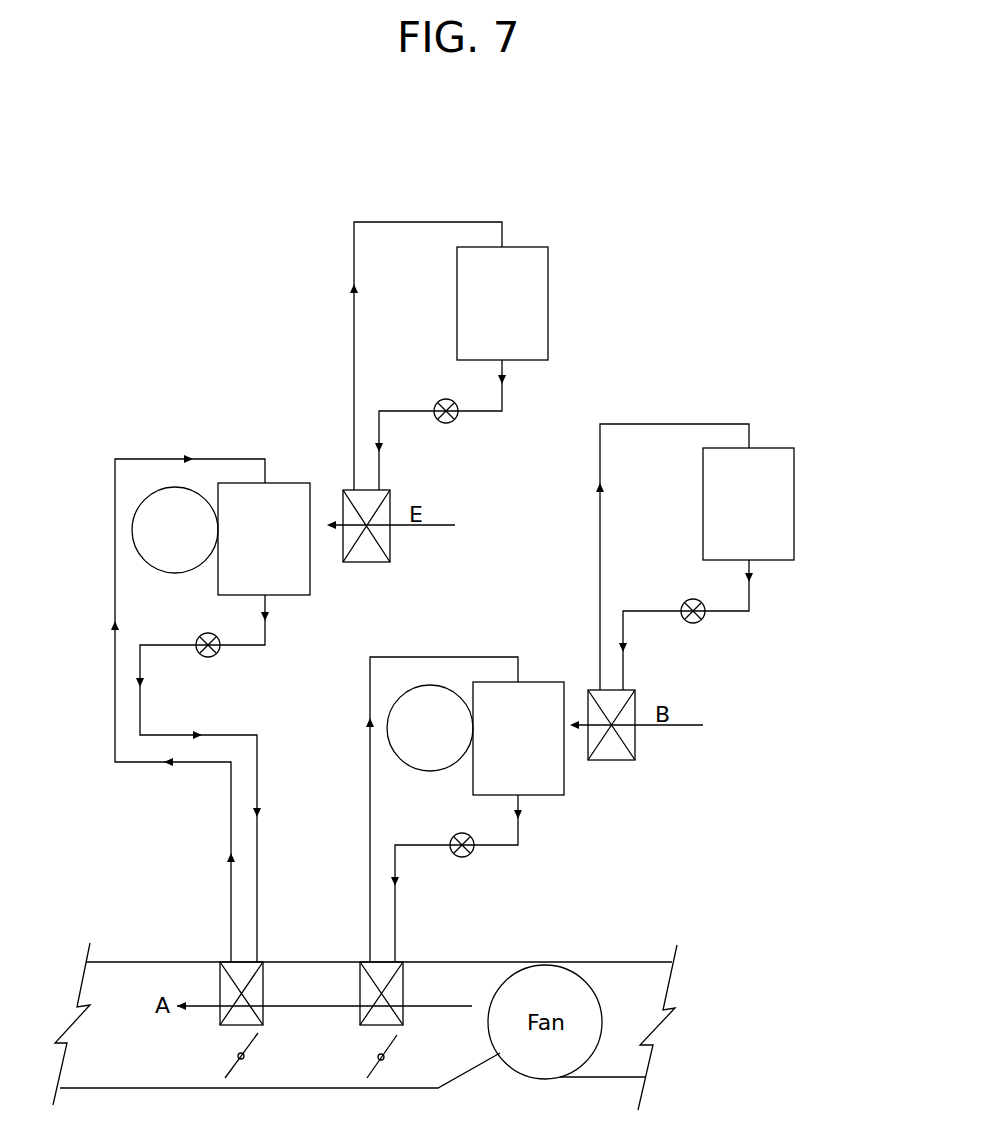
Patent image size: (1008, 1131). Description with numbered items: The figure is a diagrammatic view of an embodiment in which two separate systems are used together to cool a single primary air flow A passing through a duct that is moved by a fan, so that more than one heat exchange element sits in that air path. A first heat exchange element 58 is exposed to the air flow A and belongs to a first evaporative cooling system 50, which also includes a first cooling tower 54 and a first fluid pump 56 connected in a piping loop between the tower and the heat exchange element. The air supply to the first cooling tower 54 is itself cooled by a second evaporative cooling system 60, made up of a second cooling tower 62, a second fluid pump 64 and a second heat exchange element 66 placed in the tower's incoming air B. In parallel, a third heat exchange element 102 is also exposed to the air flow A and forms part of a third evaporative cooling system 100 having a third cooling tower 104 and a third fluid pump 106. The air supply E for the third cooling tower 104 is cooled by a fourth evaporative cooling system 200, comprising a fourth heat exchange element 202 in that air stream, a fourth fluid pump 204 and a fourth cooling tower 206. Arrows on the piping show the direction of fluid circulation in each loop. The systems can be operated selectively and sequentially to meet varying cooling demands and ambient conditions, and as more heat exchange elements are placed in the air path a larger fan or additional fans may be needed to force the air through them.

The first evaporative cooling system 50 is at (509, 853).
The first cooling tower 54 is at (530, 682).
The first fluid pump 56 is at (462, 857).
The first heat exchange element 58 is at (403, 990).
The second evaporative cooling system 60 is at (665, 415).
The second cooling tower 62 is at (794, 520).
The second fluid pump 64 is at (698, 622).
The second heat exchange element 66 is at (624, 760).
The third evaporative cooling system 100 is at (148, 455).
The third heat exchange element 102 is at (219, 990).
The third cooling tower 104 is at (278, 483).
The third fluid pump 106 is at (211, 657).
The fourth evaporative cooling system 200 is at (421, 214).
The fourth heat exchange element 202 is at (378, 562).
The fourth fluid pump 204 is at (450, 422).
The fourth cooling tower 206 is at (548, 320).